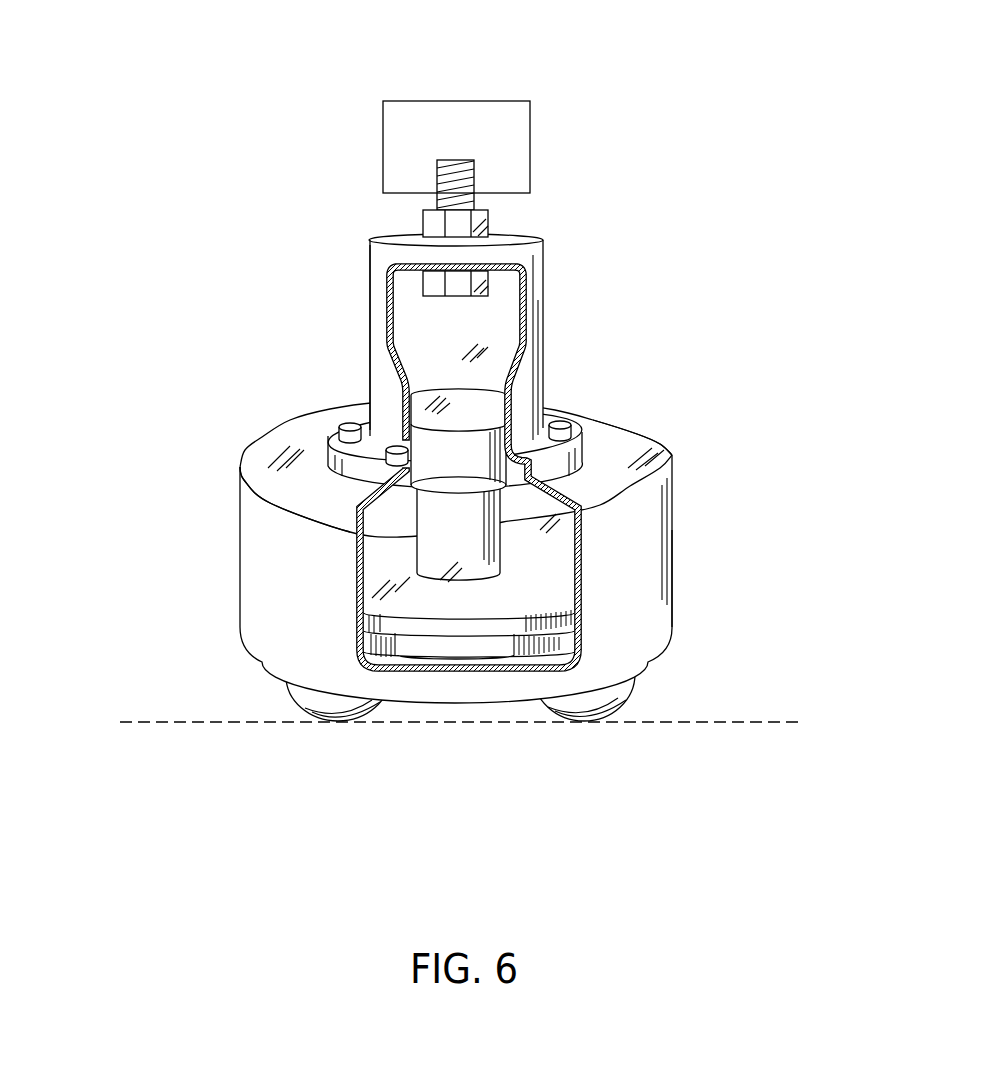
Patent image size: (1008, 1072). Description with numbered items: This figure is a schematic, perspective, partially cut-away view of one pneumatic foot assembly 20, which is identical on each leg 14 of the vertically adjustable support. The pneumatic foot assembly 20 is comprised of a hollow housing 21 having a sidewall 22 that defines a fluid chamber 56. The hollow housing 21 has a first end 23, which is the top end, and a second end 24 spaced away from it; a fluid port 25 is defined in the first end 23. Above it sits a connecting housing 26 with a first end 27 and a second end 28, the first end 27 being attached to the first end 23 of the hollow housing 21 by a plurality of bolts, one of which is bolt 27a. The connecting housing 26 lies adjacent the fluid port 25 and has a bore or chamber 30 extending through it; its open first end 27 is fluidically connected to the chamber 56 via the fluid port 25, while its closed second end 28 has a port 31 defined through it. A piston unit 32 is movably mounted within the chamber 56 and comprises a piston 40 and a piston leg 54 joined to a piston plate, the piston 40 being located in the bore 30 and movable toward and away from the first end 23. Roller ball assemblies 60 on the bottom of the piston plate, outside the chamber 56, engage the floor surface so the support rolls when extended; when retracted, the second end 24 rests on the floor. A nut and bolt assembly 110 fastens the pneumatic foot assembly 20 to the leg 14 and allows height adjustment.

The leg 14 is at (458, 102).
The nut and bolt assembly 110 is at (484, 145).
The second end of connecting housing 28 is at (541, 238).
The port 31 is at (368, 243).
The connecting housing 26 is at (545, 288).
The bore or chamber 30 is at (455, 304).
The first end of connecting housing 27 is at (320, 468).
The bolt 27a is at (352, 420).
The pneumatic foot assembly 20 is at (650, 356).
The chamber 56 is at (545, 506).
The first end of hollow housing 23 is at (638, 441).
The hollow housing 21 is at (655, 512).
The sidewall 22 is at (665, 596).
The fluid port 25 is at (357, 532).
The piston 40 is at (458, 441).
The piston leg 54 is at (458, 532).
The piston unit 32 is at (406, 597).
The second end of hollow housing 24 is at (657, 660).
The roller ball assemblies 60 is at (302, 725).